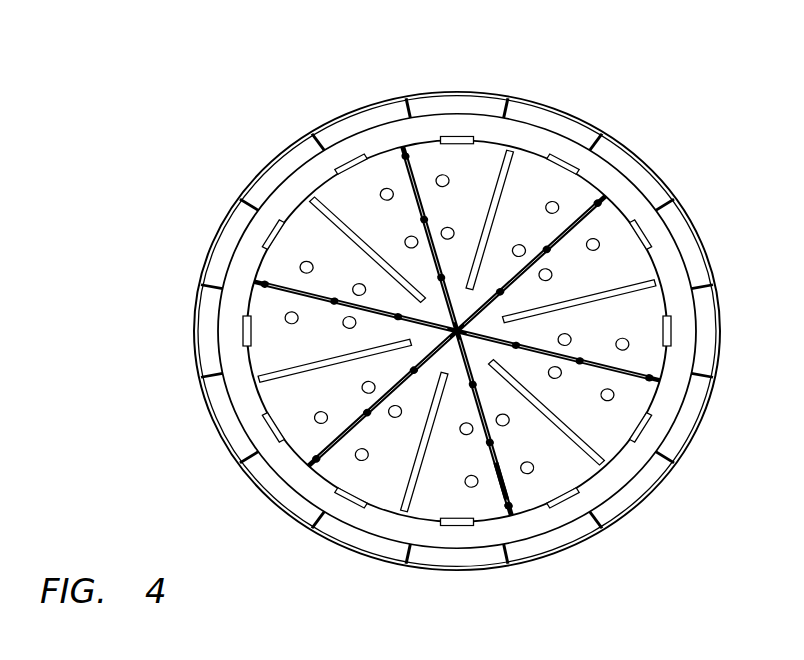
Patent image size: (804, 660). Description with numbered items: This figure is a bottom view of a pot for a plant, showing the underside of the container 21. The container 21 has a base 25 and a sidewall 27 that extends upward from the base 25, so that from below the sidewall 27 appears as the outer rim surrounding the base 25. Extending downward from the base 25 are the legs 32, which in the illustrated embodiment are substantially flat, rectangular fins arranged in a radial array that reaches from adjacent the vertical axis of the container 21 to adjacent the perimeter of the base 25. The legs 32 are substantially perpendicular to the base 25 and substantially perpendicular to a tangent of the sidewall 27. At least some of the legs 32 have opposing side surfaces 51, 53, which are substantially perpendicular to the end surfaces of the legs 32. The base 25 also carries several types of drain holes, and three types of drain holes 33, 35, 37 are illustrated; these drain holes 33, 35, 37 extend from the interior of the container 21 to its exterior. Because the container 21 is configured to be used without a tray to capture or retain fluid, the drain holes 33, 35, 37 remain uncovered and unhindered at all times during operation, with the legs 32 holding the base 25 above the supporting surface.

The container 21 is at (97, 165).
The base 25 is at (248, 403).
The sidewall 27 is at (247, 427).
The legs 32 is at (413, 172).
The drain holes 33 is at (338, 170).
The drain holes 35 is at (297, 267).
The drain holes 37 is at (280, 374).
The opposing side surface 51 is at (496, 499).
The opposing side surface 53 is at (516, 490).